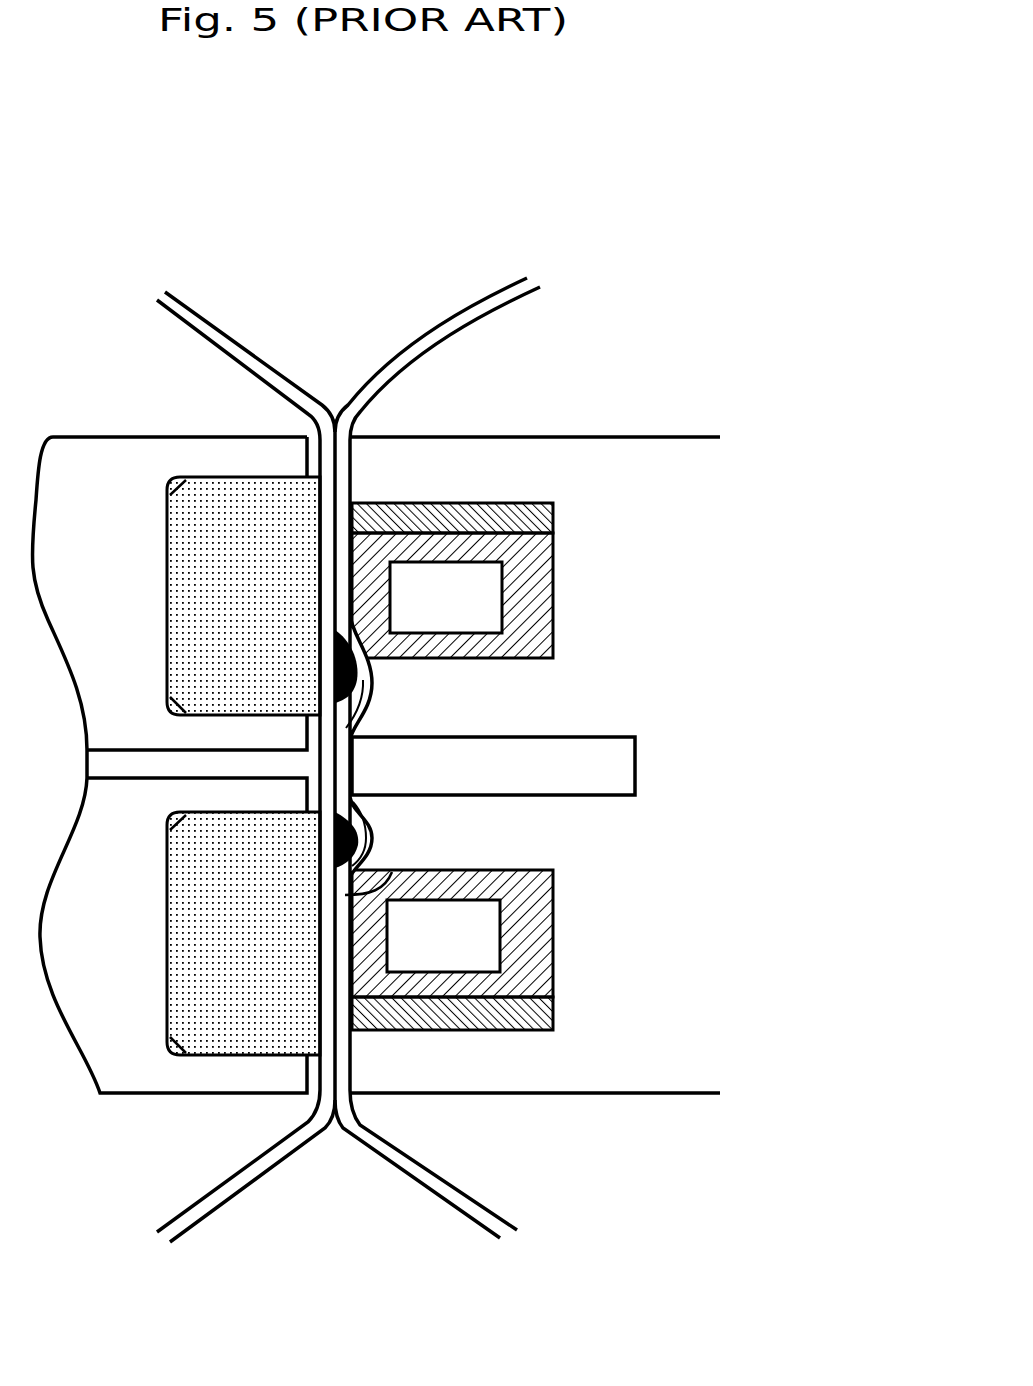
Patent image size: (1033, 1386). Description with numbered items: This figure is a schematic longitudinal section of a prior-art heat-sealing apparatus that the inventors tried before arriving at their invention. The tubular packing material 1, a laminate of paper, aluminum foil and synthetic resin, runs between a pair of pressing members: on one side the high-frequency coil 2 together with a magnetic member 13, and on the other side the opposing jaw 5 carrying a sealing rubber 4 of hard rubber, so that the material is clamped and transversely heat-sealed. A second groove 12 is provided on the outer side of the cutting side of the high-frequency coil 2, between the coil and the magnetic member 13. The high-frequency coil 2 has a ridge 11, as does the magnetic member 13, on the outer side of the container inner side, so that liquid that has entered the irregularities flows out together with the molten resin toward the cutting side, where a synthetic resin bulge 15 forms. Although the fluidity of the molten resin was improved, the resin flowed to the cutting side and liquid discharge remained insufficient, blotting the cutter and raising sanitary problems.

The tubular packing material 1 is at (443, 340).
The high-frequency coil 2 is at (553, 935).
The sealing rubber 4 is at (167, 950).
The opposing jaw 5 is at (103, 584).
The ridge 11 is at (392, 872).
The second groove 12 is at (367, 823).
The magnetic member 13 is at (553, 518).
The synthetic resin bulge 15 is at (370, 684).